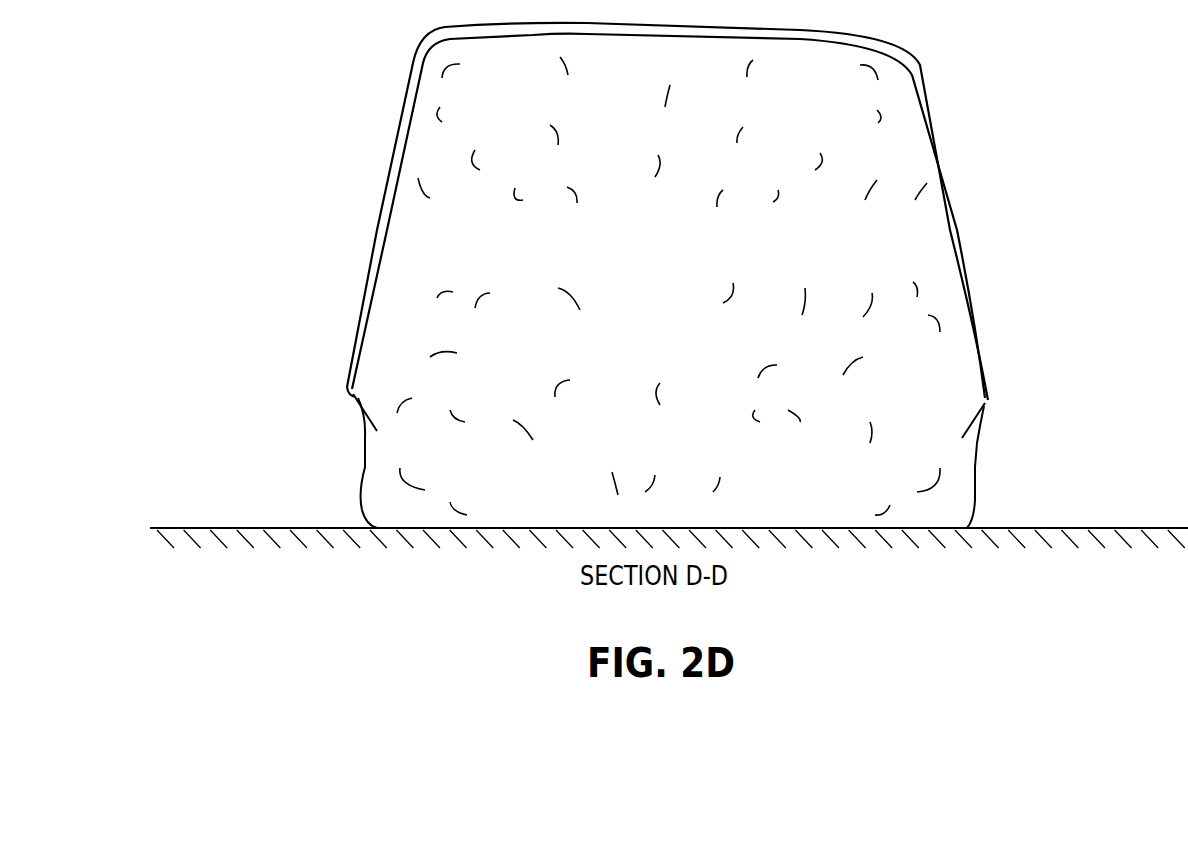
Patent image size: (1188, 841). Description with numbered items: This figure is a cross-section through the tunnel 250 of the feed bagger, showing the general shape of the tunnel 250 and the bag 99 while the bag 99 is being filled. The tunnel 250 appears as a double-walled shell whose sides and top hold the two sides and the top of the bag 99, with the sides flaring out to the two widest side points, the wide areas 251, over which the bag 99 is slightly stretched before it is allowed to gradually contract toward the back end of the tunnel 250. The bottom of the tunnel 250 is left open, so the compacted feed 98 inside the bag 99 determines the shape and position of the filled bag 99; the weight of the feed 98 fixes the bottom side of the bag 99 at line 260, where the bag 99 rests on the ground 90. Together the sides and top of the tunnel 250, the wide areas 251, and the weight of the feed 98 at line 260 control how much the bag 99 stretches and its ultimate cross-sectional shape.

The tunnel 250 is at (960, 252).
The wide area 251 is at (352, 393).
The feed 98 is at (676, 311).
The bag 99 is at (365, 472).
The line 260 is at (513, 527).
The ground 90 is at (1118, 528).